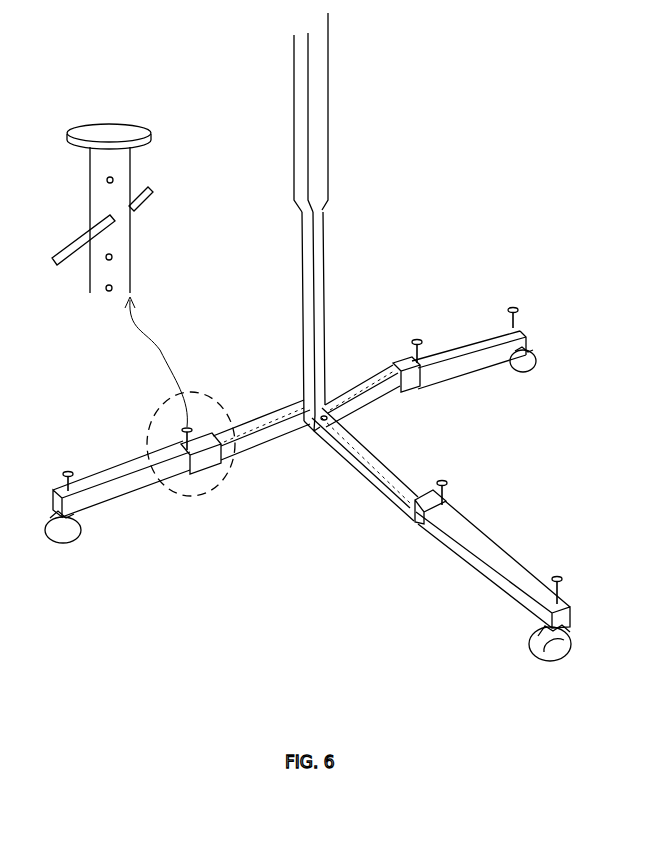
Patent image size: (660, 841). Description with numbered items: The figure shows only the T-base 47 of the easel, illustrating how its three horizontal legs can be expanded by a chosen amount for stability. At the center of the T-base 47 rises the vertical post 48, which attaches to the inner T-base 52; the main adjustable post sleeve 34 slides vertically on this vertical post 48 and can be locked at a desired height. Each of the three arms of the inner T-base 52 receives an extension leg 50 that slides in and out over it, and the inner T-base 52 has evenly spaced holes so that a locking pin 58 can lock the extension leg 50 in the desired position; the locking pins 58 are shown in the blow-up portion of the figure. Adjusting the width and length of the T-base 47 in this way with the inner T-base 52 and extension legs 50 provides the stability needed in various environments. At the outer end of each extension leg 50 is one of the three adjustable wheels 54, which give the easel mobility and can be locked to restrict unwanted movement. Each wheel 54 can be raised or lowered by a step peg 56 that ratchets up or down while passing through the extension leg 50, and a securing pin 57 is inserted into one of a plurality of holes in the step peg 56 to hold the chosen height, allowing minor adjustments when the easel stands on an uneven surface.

The main adjustable post sleeve 34 is at (315, 131).
The T-base 47 is at (283, 452).
The vertical post 48 is at (300, 283).
The extension legs 50 is at (460, 350).
The inner T-base 52 is at (372, 366).
The wheels 54 is at (528, 372).
The step peg 56 is at (510, 315).
The securing pin 57 is at (140, 205).
The locking pins 58 is at (107, 118).